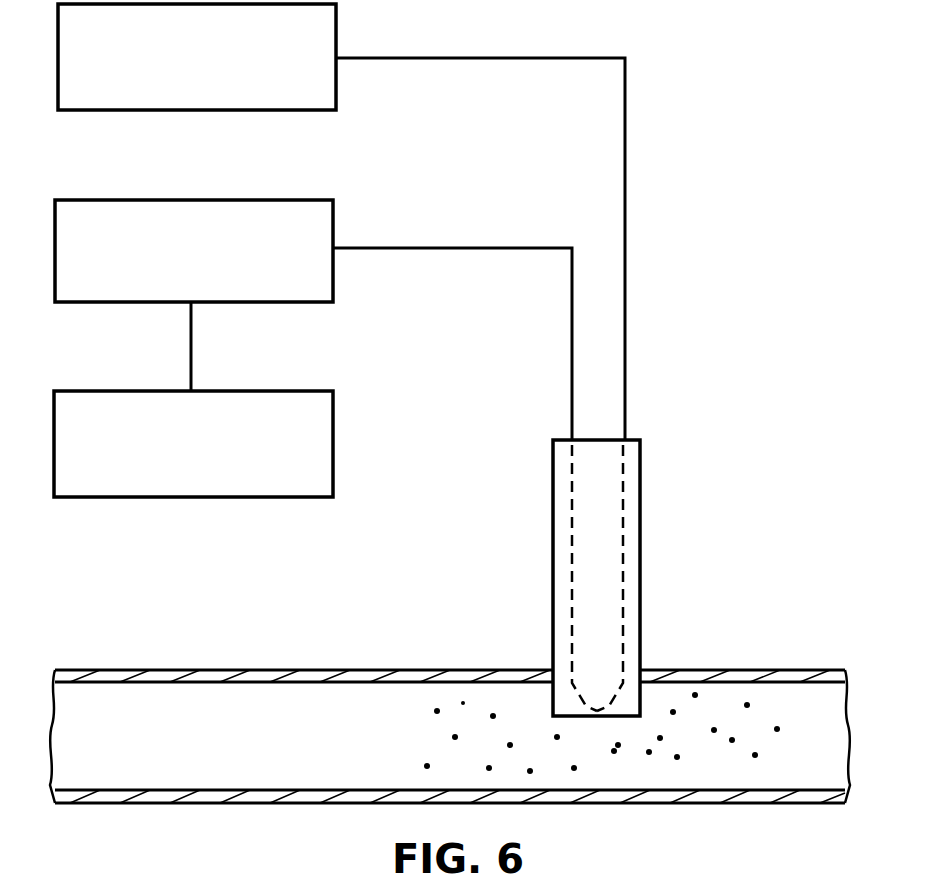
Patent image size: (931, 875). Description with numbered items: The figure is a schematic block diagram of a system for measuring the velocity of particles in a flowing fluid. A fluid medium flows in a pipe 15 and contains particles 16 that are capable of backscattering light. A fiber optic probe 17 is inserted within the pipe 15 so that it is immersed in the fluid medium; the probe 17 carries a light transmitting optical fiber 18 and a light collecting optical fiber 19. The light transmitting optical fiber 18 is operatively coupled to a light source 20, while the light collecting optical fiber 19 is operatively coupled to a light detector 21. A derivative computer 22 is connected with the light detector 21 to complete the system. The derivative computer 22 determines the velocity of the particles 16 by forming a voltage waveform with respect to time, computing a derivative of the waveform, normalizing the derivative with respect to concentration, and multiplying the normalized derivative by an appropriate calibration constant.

The pipe 15 is at (712, 668).
The particles 16 is at (618, 748).
The fiber optic probe 17 is at (648, 486).
The light transmitting optical fiber 18 is at (623, 571).
The light collecting optical fiber 19 is at (572, 545).
The light source 20 is at (237, 96).
The light detector 21 is at (245, 283).
The derivative computer 22 is at (260, 486).